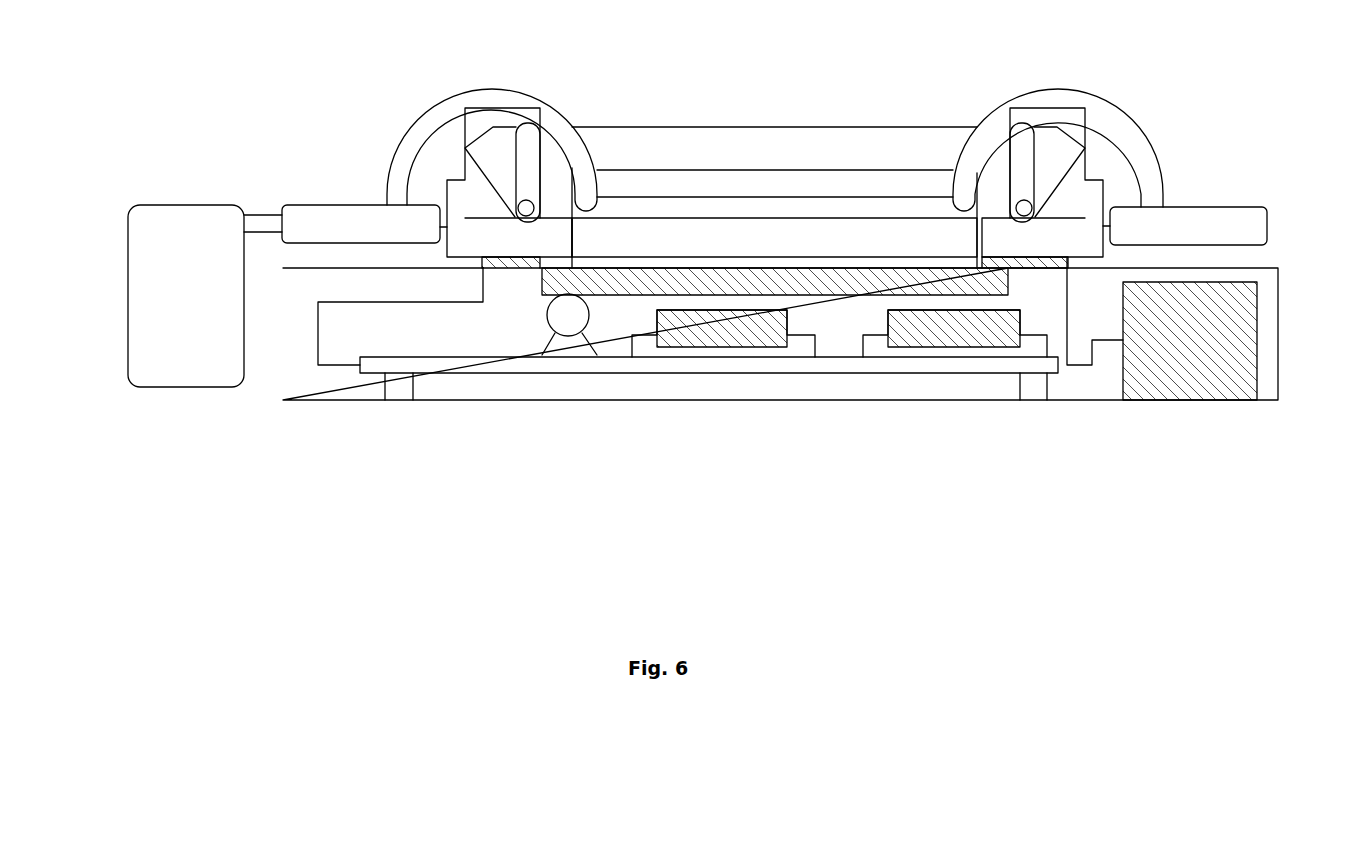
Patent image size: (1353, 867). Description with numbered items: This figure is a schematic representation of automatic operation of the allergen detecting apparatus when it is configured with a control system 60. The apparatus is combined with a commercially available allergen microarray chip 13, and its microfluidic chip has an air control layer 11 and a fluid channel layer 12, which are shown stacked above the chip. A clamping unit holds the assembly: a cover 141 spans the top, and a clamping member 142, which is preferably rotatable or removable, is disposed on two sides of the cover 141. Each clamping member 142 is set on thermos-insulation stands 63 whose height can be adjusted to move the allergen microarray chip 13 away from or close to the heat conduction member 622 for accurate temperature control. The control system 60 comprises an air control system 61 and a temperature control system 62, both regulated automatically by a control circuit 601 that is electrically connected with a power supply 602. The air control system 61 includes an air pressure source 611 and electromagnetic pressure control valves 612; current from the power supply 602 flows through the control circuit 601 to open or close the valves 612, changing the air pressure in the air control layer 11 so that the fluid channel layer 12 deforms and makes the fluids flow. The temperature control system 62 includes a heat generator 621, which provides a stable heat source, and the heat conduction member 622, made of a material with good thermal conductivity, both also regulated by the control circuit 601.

The air control layer 11 is at (880, 185).
The fluid channel layer 12 is at (912, 210).
The allergen microarray chip 13 is at (710, 240).
The cover 141 is at (778, 147).
The clamping member 142 is at (478, 133).
The control system 60 is at (749, 400).
The control circuit 601 is at (1012, 340).
The power supply 602 is at (1160, 370).
The air control system 61 is at (702, 319).
The air pressure source 611 is at (210, 370).
The electromagnetic pressure control valve 612 is at (298, 232).
The temperature control system 62 is at (765, 383).
The heat generator 621 is at (568, 322).
The heat conduction member 622 is at (608, 290).
The thermos-insulation stand 63 is at (1060, 262).